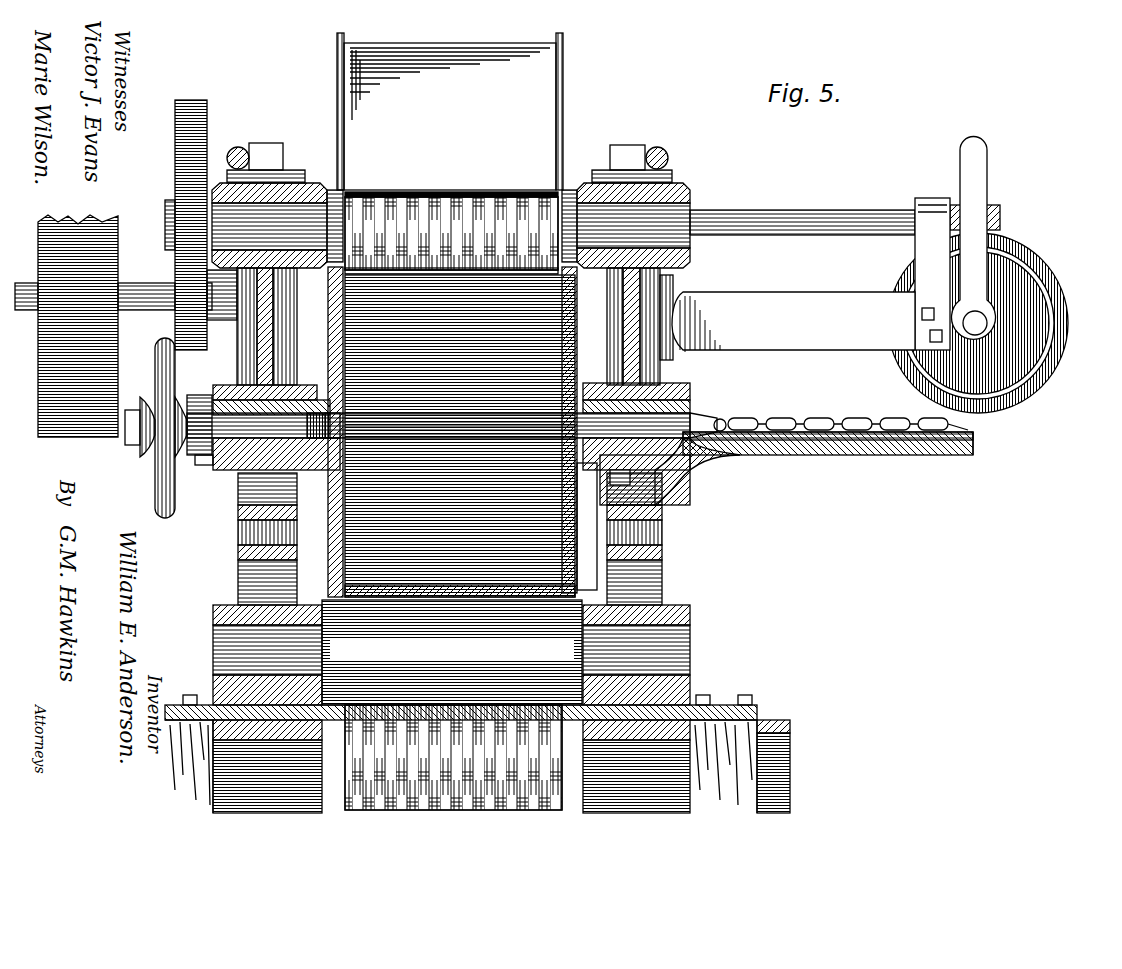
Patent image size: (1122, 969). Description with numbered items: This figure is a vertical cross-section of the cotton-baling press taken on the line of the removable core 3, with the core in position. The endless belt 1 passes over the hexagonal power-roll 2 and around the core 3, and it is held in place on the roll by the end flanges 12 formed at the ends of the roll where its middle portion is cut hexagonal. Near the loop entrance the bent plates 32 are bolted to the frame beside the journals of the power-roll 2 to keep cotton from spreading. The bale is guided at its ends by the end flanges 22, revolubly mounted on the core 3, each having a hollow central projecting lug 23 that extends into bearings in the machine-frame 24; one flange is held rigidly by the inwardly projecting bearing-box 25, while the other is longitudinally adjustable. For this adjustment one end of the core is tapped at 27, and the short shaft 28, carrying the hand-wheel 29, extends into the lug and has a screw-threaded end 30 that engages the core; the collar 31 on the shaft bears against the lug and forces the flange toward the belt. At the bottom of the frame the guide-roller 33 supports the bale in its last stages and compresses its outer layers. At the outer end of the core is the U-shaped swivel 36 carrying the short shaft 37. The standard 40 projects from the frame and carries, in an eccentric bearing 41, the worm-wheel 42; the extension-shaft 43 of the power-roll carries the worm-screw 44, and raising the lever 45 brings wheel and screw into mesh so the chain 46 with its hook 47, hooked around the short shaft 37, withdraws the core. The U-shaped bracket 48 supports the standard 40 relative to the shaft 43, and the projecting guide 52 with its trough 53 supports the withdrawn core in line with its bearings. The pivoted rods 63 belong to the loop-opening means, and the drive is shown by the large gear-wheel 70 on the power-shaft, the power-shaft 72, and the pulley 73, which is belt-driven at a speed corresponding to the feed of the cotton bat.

The endless belt 1 is at (512, 200).
The power-roll 2 is at (390, 197).
The core 3 is at (579, 430).
The end flanges 12 is at (338, 192).
The end flanges 22 is at (320, 372).
The hollow central projecting lug 23 is at (232, 395).
The machine-frame 24 is at (238, 522).
The projecting bearing-box 25 is at (623, 326).
The tapped end of the core 27 is at (317, 400).
The short shaft 28 is at (210, 475).
The hand-wheel 29 is at (155, 486).
The screw-threaded end of the short shaft 30 is at (322, 470).
The collar 31 is at (200, 395).
The bent plates 32 is at (563, 162).
The guide-roller 33 is at (326, 600).
The U-shaped swivel 36 is at (724, 422).
The short shaft 37 is at (722, 442).
The standard 40 is at (793, 333).
The eccentric bearing 41 is at (988, 323).
The worm-wheel 42 is at (1066, 303).
The extension-shaft 43 is at (803, 210).
The worm-screw 44 is at (1001, 217).
The lever 45 is at (988, 172).
The chain 46 is at (842, 418).
The hook 47 is at (713, 416).
The U-shaped bracket 48 is at (930, 198).
The projecting guide 52 is at (975, 447).
The trough 53 is at (905, 455).
The pivoted rods 63 is at (451, 151).
The large gear-wheel 70 is at (197, 100).
The power-shaft 72 is at (113, 281).
The pulley 73 is at (78, 218).